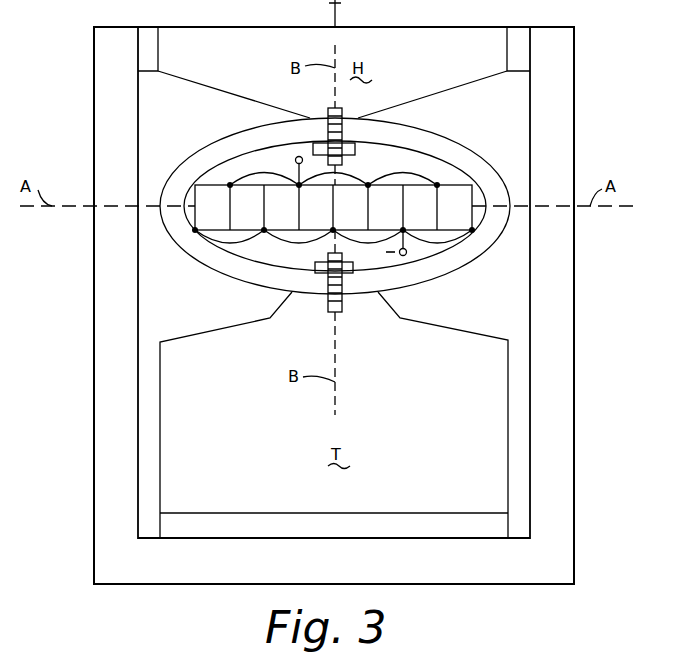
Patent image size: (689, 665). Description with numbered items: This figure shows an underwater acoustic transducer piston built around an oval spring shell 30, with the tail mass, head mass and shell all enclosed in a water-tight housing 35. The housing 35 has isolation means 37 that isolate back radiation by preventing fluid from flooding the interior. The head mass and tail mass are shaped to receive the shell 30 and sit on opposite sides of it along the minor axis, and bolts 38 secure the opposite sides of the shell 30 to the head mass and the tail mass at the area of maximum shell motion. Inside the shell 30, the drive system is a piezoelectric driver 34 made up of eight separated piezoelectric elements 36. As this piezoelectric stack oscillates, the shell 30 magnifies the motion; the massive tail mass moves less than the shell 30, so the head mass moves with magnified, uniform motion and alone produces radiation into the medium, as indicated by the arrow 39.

The shell 30 is at (578, 144).
The piezoelectric driver 34 is at (405, 173).
The housing 35 is at (568, 277).
The piezoelectric elements 36 is at (313, 222).
The isolation means 37 is at (149, 33).
The bolts 38 is at (315, 150).
The arrow 39 is at (337, 7).